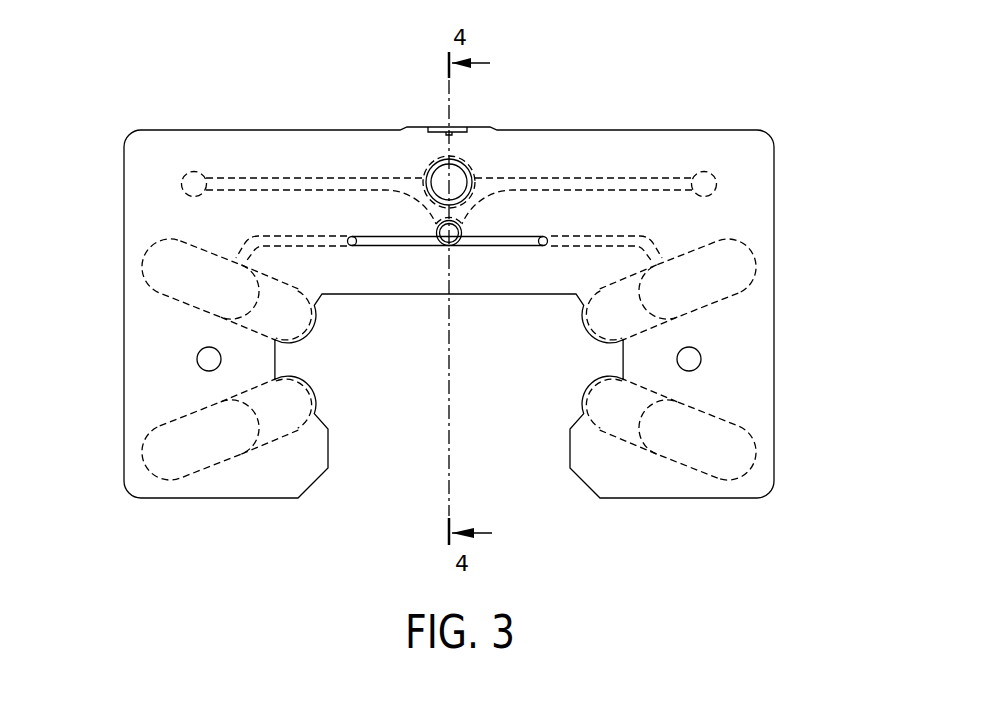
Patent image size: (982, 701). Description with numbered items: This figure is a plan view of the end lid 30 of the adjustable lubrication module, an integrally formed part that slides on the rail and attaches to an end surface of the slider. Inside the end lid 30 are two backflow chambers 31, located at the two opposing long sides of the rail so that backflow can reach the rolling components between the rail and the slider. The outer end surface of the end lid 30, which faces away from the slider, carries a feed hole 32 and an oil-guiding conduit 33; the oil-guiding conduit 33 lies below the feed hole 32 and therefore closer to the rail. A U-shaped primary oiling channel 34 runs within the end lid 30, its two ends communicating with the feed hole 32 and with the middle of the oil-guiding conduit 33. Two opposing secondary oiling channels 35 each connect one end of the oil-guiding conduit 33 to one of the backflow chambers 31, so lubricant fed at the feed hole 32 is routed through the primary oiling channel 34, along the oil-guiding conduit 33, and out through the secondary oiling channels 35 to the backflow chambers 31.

The end lid 30 is at (672, 93).
The backflow chambers 31 is at (165, 239).
The feed hole 32 is at (442, 182).
The oil-guiding conduit 33 is at (508, 243).
The primary oiling channel 34 is at (458, 224).
The secondary oiling channels 35 is at (333, 248).